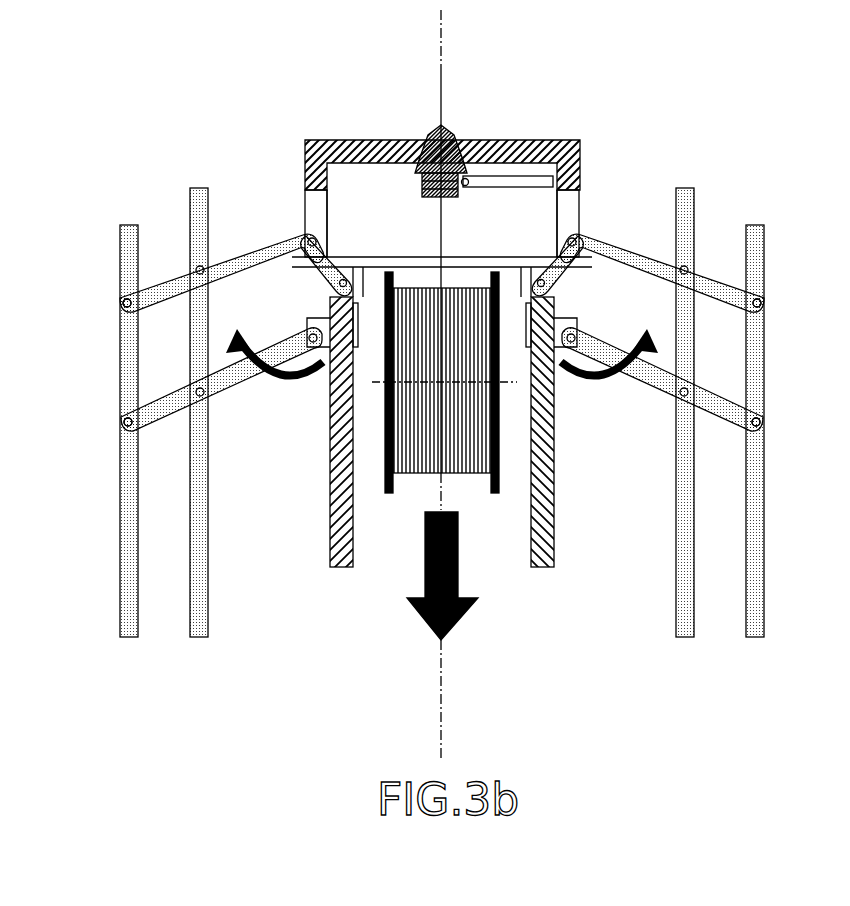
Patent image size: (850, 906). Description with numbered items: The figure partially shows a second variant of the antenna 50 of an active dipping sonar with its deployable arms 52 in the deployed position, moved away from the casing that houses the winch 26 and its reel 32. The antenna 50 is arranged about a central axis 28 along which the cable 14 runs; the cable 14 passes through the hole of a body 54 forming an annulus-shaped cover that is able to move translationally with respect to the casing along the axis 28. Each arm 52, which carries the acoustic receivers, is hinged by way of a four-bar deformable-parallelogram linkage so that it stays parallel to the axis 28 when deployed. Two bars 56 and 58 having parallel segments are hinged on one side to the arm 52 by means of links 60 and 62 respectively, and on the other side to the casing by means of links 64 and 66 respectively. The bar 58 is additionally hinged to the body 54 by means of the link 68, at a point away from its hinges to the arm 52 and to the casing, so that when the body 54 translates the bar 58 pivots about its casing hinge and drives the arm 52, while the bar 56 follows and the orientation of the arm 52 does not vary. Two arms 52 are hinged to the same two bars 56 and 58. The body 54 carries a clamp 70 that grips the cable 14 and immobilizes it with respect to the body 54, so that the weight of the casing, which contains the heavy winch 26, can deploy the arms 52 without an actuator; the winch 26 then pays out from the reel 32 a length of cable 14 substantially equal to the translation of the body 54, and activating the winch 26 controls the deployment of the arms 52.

The cable 14 is at (442, 92).
The winch 26 is at (408, 497).
The axis 28 is at (445, 737).
The reel 32 is at (500, 468).
The antenna 50 is at (560, 165).
The deployable arms 52 is at (130, 628).
The body 54 is at (343, 140).
The bar 56 is at (223, 382).
The bar 58 is at (243, 252).
The link 60 is at (121, 425).
The link 62 is at (122, 308).
The link 64 is at (301, 324).
The link 66 is at (356, 276).
The link 68 is at (322, 238).
The clamp 70 is at (470, 127).